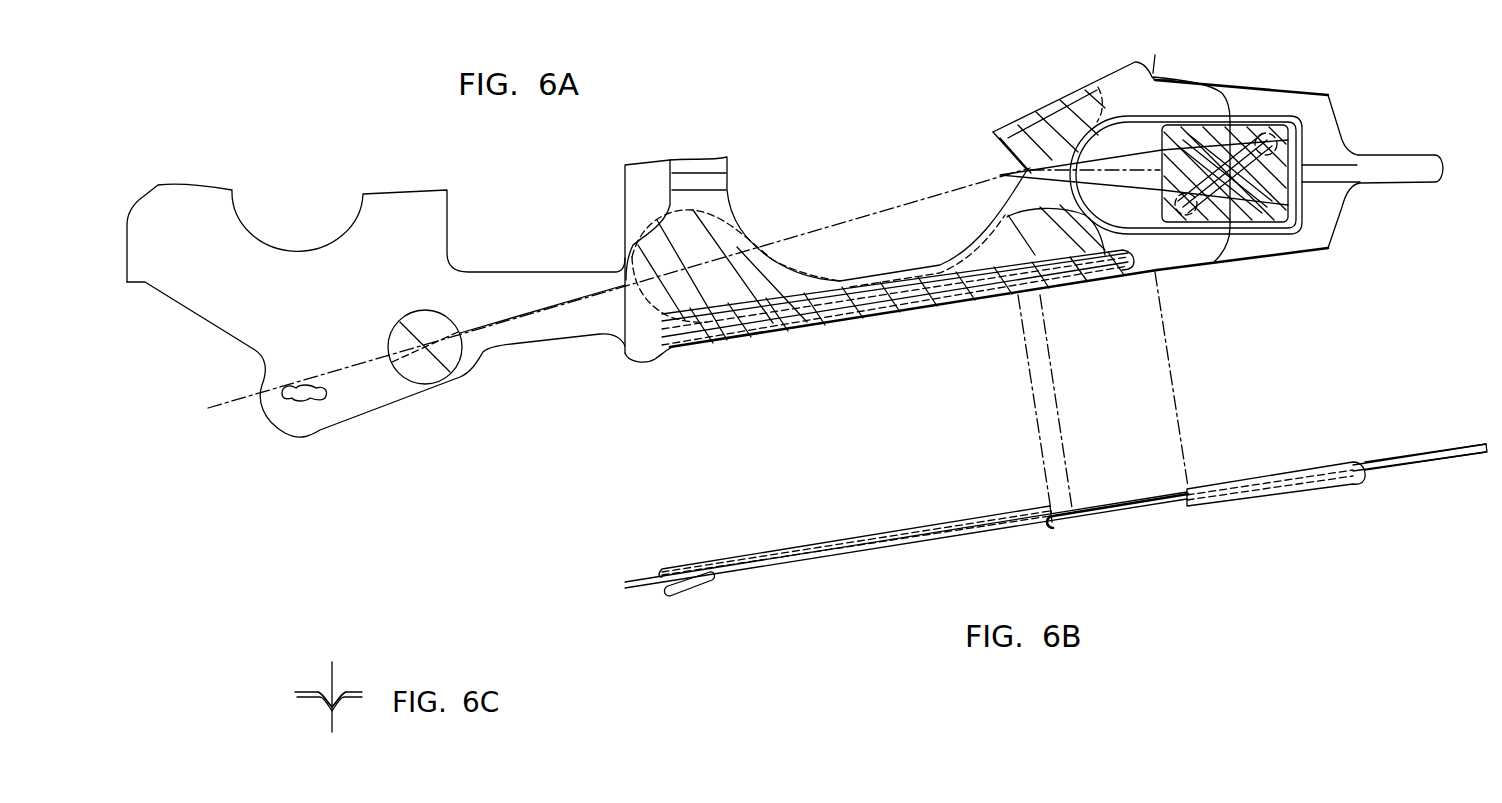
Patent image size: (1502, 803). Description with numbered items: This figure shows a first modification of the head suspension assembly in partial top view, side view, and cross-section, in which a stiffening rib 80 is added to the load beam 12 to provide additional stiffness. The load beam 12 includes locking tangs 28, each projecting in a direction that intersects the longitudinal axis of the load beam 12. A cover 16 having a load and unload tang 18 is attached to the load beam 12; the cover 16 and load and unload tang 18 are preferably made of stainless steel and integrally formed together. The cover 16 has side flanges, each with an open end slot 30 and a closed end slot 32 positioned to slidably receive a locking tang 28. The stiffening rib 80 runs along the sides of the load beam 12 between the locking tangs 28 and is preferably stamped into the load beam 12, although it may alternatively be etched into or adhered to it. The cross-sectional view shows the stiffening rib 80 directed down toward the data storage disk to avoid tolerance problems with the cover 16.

In FIG. 6A, the load beam 12 is at (368, 400).
In FIG. 6B, the load beam 12 is at (640, 582).
In FIG. 6C, the load beam 12 is at (358, 700).
In FIG. 6B, the cover 16 is at (1353, 480).
In FIG. 6A, the load and unload tang 18 is at (1378, 168).
In FIG. 6B, the load and unload tang 18 is at (1430, 457).
In FIG. 6A, the locking tangs 28 is at (647, 357).
In FIG. 6B, the open end slot 30 is at (710, 574).
In FIG. 6B, the closed end slot 32 is at (1065, 528).
In FIG. 6A, the stiffening rib 80 is at (1082, 288).
In FIG. 6B, the stiffening rib 80 is at (1012, 515).
In FIG. 6C, the stiffening rib 80 is at (325, 703).